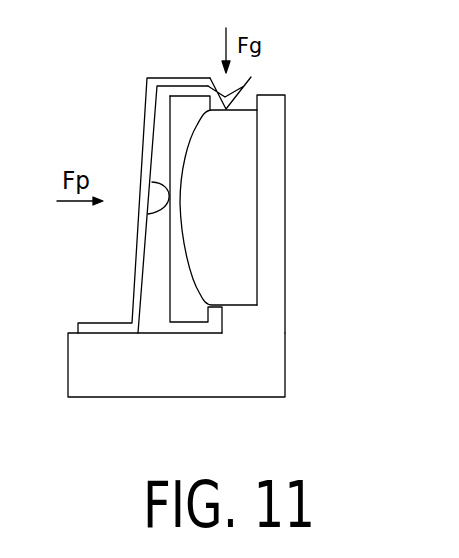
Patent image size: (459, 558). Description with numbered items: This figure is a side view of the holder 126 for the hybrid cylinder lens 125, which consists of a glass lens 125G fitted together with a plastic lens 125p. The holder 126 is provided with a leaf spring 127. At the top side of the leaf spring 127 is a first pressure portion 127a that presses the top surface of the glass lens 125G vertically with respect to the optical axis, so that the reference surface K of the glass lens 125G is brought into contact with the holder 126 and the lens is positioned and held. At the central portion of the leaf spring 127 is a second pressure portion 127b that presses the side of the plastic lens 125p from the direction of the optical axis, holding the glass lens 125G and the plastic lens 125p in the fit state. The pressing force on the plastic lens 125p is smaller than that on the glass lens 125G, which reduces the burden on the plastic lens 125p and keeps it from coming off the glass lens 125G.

The hybrid cylinder lens 125 is at (247, 160).
The glass lens 125G is at (248, 237).
The plastic lens 125p is at (170, 250).
The holder 126 is at (240, 378).
The leaf spring 127 is at (175, 77).
The first pressure portion 127a is at (250, 89).
The second pressure portion 127b is at (151, 183).
The reference surface K is at (247, 308).